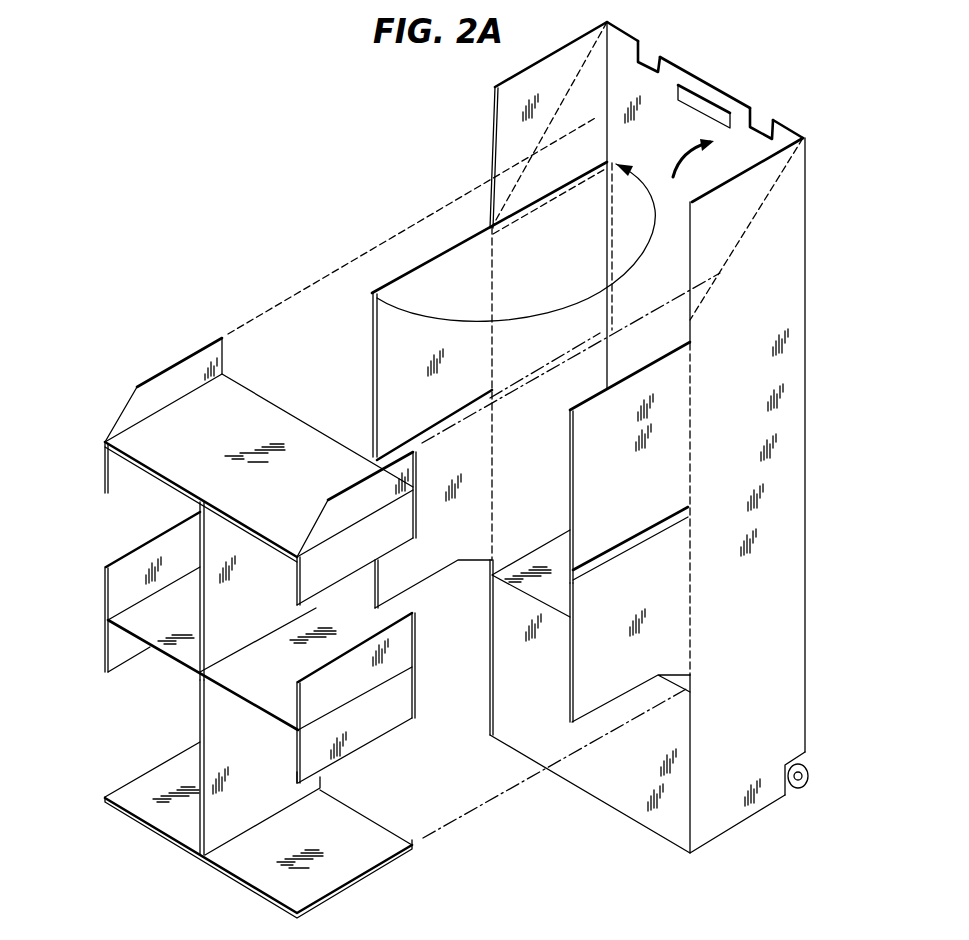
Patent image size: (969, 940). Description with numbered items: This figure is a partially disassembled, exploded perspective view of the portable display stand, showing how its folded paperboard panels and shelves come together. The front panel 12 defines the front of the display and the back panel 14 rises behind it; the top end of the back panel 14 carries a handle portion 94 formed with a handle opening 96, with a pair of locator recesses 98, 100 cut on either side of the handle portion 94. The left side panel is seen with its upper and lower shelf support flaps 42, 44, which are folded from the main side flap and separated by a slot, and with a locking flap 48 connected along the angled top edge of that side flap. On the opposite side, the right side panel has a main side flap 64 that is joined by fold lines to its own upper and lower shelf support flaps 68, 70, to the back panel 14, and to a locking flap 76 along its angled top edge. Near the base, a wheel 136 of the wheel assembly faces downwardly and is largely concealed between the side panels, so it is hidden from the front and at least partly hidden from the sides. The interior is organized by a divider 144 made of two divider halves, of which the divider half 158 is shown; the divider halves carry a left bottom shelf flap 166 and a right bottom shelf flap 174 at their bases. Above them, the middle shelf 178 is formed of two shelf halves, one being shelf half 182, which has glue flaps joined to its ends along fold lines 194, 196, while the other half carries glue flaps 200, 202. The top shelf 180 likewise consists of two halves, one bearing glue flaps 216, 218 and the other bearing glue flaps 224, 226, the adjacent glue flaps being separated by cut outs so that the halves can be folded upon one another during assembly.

The front panel 12 is at (515, 660).
The back panel 14 is at (740, 167).
The upper shelf support flap 42 is at (402, 340).
The lower shelf support flap 44 is at (435, 545).
The locking flap 48 is at (495, 127).
The main side flap 64 is at (783, 572).
The upper shelf support flap 68 is at (590, 465).
The lower shelf support flap 70 is at (587, 662).
The locking flap 76 is at (735, 197).
The handle portion 94 is at (688, 174).
The handle opening 96 is at (708, 110).
The locator recess 98 is at (657, 58).
The locator recess 100 is at (758, 118).
The wheel 136 is at (808, 780).
The divider 144 is at (145, 817).
The divider half 158 is at (258, 751).
The left bottom shelf flap 166 is at (147, 792).
The right bottom shelf flap 174 is at (320, 827).
The middle shelf 178 is at (126, 636).
The top shelf 180 is at (131, 433).
The shelf half 182 is at (188, 627).
The fold line 194 is at (117, 578).
The fold line 196 is at (297, 688).
The glue flap 200 is at (117, 657).
The glue flap 202 is at (297, 775).
The glue flap 216 is at (292, 582).
The glue flap 218 is at (117, 478).
The glue flap 224 is at (305, 508).
The glue flap 226 is at (172, 382).